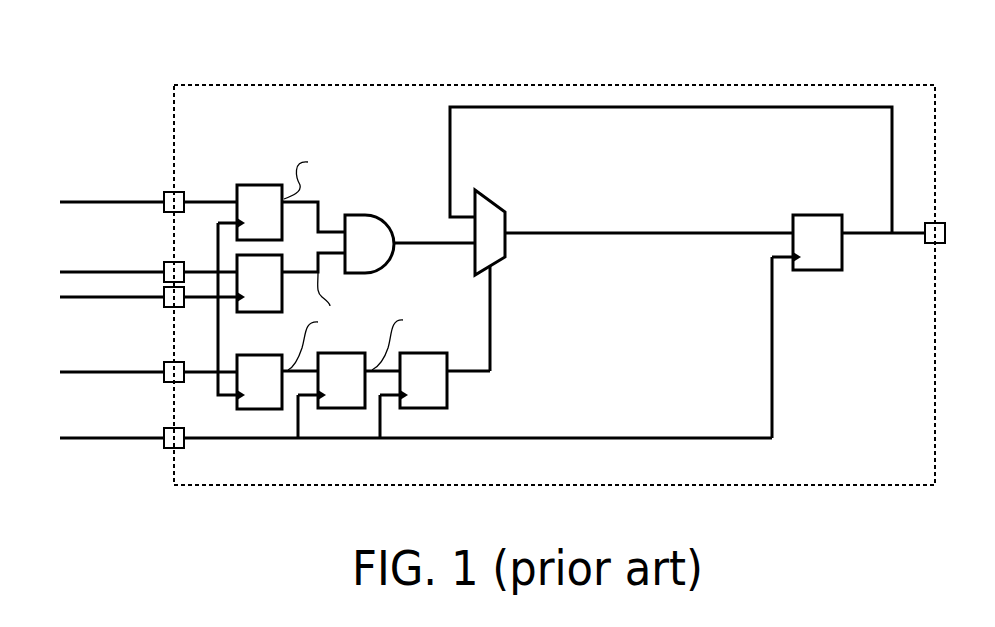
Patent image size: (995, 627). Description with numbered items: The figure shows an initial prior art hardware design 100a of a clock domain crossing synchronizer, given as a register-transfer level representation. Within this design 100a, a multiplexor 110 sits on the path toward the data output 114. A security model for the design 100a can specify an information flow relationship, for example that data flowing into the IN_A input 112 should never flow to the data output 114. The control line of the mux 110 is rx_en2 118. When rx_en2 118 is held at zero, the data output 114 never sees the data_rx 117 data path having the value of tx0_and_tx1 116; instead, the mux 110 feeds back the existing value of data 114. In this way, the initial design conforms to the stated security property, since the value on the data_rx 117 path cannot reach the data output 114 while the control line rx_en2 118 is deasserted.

The initial hardware design 100a is at (499, 249).
The IN_A input 112 is at (72, 167).
The tx0_and_tx1 116 is at (438, 238).
The multiplexor 110 is at (493, 203).
The data_rx 117 is at (649, 210).
The data output 114 is at (866, 268).
The rx_en2 118 is at (489, 396).